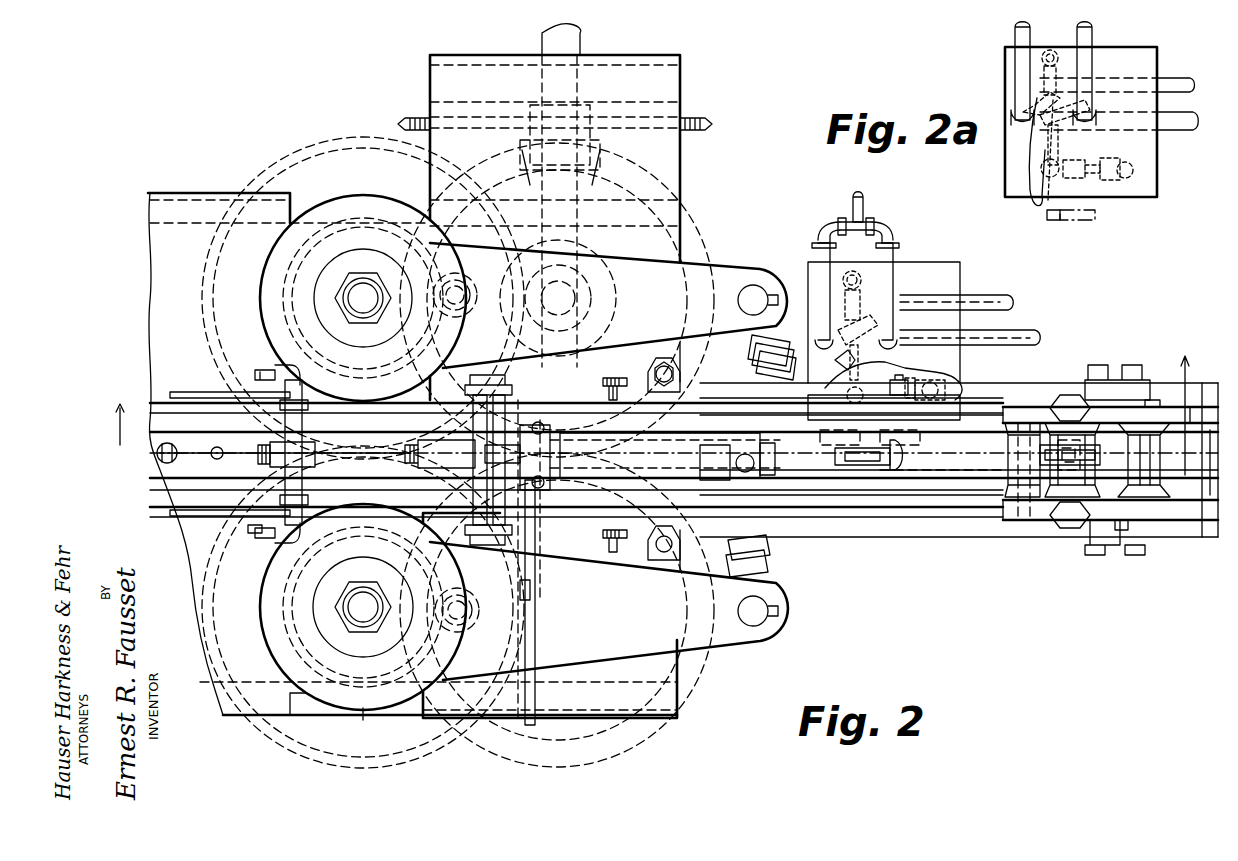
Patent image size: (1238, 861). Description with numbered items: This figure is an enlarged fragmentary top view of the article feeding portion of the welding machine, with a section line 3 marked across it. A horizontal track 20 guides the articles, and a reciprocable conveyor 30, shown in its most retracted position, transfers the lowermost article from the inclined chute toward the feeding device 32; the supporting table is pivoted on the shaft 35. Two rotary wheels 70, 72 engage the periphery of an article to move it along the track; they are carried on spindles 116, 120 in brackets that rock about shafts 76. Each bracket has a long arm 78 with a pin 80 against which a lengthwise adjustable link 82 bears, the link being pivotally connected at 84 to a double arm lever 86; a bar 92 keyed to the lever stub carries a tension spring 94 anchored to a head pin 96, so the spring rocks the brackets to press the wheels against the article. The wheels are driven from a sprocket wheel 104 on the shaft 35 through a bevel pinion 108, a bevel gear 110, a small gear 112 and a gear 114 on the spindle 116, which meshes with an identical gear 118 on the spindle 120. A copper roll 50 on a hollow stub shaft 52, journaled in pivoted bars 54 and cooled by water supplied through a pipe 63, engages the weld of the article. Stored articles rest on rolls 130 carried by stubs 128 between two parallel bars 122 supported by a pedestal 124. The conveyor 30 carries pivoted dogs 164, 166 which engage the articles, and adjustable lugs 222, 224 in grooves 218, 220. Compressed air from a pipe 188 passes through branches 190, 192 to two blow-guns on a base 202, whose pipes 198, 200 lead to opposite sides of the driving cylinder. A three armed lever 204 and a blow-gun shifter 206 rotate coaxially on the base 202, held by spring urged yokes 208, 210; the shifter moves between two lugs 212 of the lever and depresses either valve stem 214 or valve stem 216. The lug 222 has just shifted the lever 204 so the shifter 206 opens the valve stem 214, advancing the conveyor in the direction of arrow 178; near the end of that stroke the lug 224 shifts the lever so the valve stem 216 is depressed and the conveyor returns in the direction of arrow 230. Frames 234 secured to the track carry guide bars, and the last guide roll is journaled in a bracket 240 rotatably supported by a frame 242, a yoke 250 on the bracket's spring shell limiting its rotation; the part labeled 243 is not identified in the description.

In FIG. 2, the section line 3- 3 is at (653, 413).
In FIG. 2, the horizontal track 20 is at (190, 455).
In FIG. 2, the conveyor 30 is at (972, 510).
In FIG. 2, the feeding device 32 is at (375, 742).
In FIG. 2, the pivot shaft 35 is at (582, 45).
In FIG. 2, the copper roll 50 is at (280, 500).
In FIG. 2, the hollow stub shaft 52 is at (290, 440).
In FIG. 2, the bars 54 is at (190, 395).
In FIG. 2, the pipe 63 is at (262, 535).
In FIG. 2, the rotary wheel 70 is at (338, 210).
In FIG. 2, the rotary wheel 72 is at (270, 614).
In FIG. 2, the shafts 76 is at (462, 300).
In FIG. 2, the long arm 78 is at (672, 252).
In FIG. 2, the pin 80 is at (750, 292).
In FIG. 2, the lengthwise adjustable link 82 is at (792, 355).
In FIG. 2, the pivotal connection 84 is at (810, 440).
In FIG. 2, the double arm lever 86 is at (825, 443).
In FIG. 2, the bar 92 is at (635, 530).
In FIG. 2, the tension spring 94 is at (535, 610).
In FIG. 2, the head pin 96 is at (526, 722).
In FIG. 2, the sprocket wheel 104 is at (412, 124).
In FIG. 2, the bevel pinion 108 is at (600, 158).
In FIG. 2, the bevel gear 110 is at (655, 192).
In FIG. 2, the small gear 112 is at (596, 294).
In FIG. 2, the gear 114 is at (314, 150).
In FIG. 2, the spindle 116 is at (357, 298).
In FIG. 2, the gear 118 is at (420, 740).
In FIG. 2, the spindle 120 is at (357, 612).
In FIG. 2, the parallel bars 122 is at (1152, 405).
In FIG. 2, the pedestal 124 is at (1095, 542).
In FIG. 2, the stubs 128 is at (1150, 525).
In FIG. 2, the rolls 130 is at (1150, 475).
In FIG. 2, the dog 164 is at (880, 462).
In FIG. 2, the dog 166 is at (1090, 458).
In FIG. 2, the arrow 178 is at (950, 555).
In FIG. 2, the pipe 188 is at (866, 210).
In FIG. 2, the branch pipe 190 is at (820, 240).
In FIG. 2A, the branch pipe 190 is at (1015, 36).
In FIG. 2, the branch pipe 192 is at (900, 235).
In FIG. 2A, the branch pipe 192 is at (1095, 38).
In FIG. 2, the pipe 198 is at (995, 295).
In FIG. 2A, the pipe 198 is at (1172, 75).
In FIG. 2, the pipe 200 is at (1040, 338).
In FIG. 2A, the pipe 200 is at (1172, 135).
In FIG. 2, the base 202 is at (958, 272).
In FIG. 2A, the base 202 is at (1155, 190).
In FIG. 2, the three armed lever 204 is at (905, 408).
In FIG. 2A, the three armed lever 204 is at (1030, 208).
In FIG. 2, the blow-gun shifter 206 is at (860, 352).
In FIG. 2A, the blow-gun shifter 206 is at (1052, 128).
In FIG. 2, the spring urged yoke 208 is at (845, 285).
In FIG. 2A, the spring urged yoke 208 is at (1052, 66).
In FIG. 2, the spring urged yoke 210 is at (915, 382).
In FIG. 2A, the spring urged yoke 210 is at (1115, 175).
In FIG. 2, the lugs 212 is at (852, 365).
In FIG. 2A, the lugs 212 is at (1075, 160).
In FIG. 2A, the valve stem 214 is at (1040, 105).
In FIG. 2, the valve stem 216 is at (866, 322).
In FIG. 2A, the valve stem 216 is at (1060, 112).
In FIG. 2, the longitudinal groove 218 is at (900, 440).
In FIG. 2, the longitudinal groove 220 is at (1088, 440).
In FIG. 2, the lug 222 is at (786, 474).
In FIG. 2A, the lug 224 is at (1083, 220).
In FIG. 2, the arrow 230 is at (908, 571).
In FIG. 2, the frames 234 is at (615, 378).
In FIG. 2, the bracket 240 is at (480, 518).
In FIG. 2, the frame 242 is at (540, 395).
In FIG. 2, the plate 243 is at (538, 423).
In FIG. 2, the yoke 250 is at (565, 465).